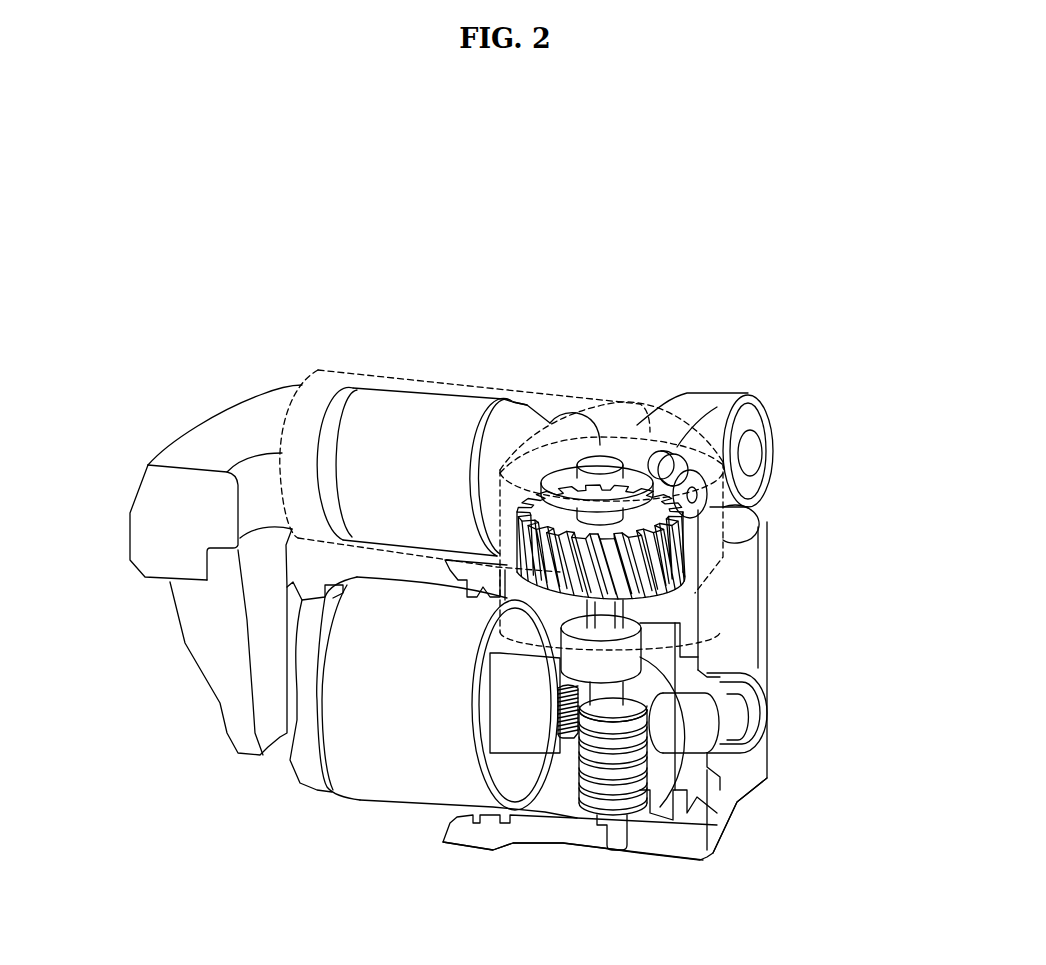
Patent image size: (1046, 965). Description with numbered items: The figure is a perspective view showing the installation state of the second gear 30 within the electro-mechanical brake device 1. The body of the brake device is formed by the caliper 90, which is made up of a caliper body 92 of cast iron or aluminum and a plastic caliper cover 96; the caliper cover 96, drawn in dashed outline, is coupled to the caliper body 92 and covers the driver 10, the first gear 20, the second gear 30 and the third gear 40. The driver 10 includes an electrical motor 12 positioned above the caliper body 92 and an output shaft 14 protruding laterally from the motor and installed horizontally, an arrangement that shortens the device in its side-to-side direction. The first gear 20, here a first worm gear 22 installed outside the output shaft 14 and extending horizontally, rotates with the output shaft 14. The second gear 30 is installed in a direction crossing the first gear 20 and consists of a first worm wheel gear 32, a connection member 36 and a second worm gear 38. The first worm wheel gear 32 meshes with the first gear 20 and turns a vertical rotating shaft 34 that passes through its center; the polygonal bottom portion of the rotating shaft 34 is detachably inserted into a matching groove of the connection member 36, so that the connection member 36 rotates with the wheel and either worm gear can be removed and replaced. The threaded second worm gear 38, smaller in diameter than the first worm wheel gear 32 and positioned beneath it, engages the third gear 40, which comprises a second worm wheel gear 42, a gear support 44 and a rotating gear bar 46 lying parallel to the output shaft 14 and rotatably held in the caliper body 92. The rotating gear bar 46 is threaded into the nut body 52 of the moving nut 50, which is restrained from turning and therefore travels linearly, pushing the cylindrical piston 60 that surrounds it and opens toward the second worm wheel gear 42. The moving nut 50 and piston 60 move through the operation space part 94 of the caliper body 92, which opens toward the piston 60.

The electro-mechanical brake device 1 is at (485, 280).
The driver 10 is at (533, 394).
The electrical motor 12 is at (548, 417).
The output shaft 14 is at (699, 496).
The first gear 20 is at (666, 444).
The first worm gear 22 is at (690, 413).
The second gear 30 is at (702, 623).
The first worm wheel gear 32 is at (658, 550).
The rotating shaft 34 is at (607, 617).
The connection member 36 is at (636, 657).
The second worm gear 38 is at (622, 748).
The third gear 40 is at (638, 824).
The second worm wheel gear 42 is at (634, 727).
The gear support 44 is at (681, 747).
The rotating gear bar 46 is at (567, 737).
The moving nut 50 is at (512, 778).
The nut body 52 is at (497, 737).
The piston 60 is at (378, 782).
The caliper 90 is at (237, 388).
The caliper body 92 is at (770, 805).
The operation space part 94 is at (545, 858).
The caliper cover 96 is at (363, 362).